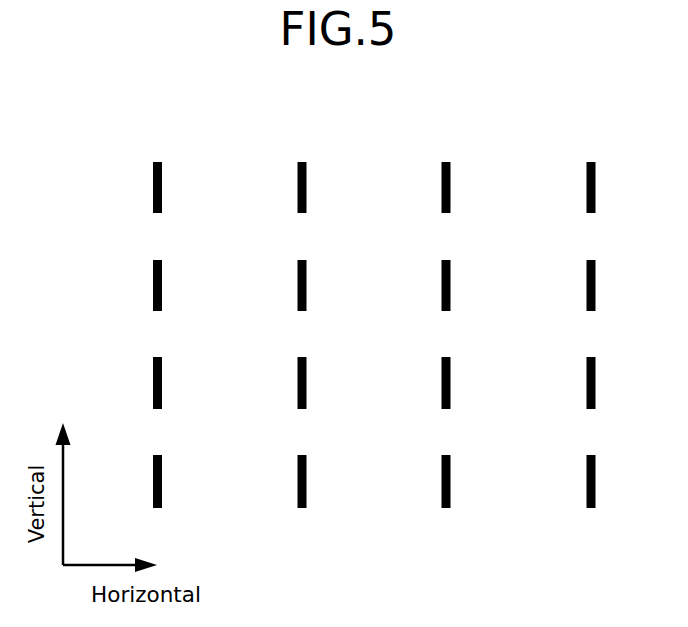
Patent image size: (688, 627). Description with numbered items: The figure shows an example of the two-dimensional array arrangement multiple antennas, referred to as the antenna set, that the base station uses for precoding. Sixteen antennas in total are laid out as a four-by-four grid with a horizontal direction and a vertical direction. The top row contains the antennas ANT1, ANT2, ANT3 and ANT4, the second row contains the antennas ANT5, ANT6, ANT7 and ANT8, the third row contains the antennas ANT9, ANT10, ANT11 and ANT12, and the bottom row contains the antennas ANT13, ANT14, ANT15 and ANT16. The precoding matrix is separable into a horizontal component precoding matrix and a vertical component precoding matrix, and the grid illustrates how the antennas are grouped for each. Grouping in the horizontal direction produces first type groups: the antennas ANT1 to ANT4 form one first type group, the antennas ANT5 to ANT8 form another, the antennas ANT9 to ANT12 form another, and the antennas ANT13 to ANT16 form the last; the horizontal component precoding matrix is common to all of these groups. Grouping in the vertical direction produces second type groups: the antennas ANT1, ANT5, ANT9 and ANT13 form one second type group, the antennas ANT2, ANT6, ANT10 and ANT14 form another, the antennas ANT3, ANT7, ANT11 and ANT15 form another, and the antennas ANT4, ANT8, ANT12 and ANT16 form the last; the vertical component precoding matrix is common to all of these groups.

The antenna ANT1 is at (157, 171).
The antenna ANT2 is at (302, 171).
The antenna ANT3 is at (446, 171).
The antenna ANT4 is at (591, 171).
The antenna ANT5 is at (157, 269).
The antenna ANT6 is at (302, 269).
The antenna ANT7 is at (446, 269).
The antenna ANT8 is at (591, 269).
The antenna ANT9 is at (157, 367).
The antenna ANT10 is at (302, 367).
The antenna ANT11 is at (446, 367).
The antenna ANT12 is at (591, 367).
The antenna ANT13 is at (157, 465).
The antenna ANT14 is at (302, 465).
The antenna ANT15 is at (446, 465).
The antenna ANT16 is at (591, 465).